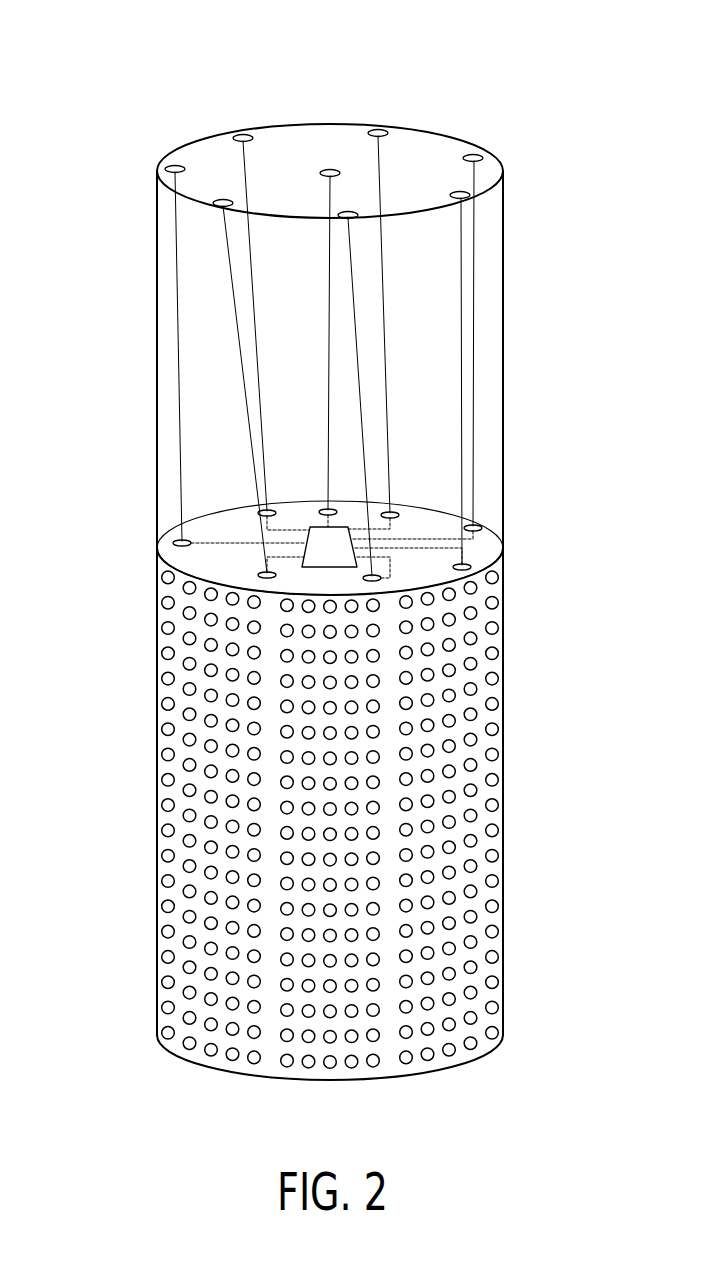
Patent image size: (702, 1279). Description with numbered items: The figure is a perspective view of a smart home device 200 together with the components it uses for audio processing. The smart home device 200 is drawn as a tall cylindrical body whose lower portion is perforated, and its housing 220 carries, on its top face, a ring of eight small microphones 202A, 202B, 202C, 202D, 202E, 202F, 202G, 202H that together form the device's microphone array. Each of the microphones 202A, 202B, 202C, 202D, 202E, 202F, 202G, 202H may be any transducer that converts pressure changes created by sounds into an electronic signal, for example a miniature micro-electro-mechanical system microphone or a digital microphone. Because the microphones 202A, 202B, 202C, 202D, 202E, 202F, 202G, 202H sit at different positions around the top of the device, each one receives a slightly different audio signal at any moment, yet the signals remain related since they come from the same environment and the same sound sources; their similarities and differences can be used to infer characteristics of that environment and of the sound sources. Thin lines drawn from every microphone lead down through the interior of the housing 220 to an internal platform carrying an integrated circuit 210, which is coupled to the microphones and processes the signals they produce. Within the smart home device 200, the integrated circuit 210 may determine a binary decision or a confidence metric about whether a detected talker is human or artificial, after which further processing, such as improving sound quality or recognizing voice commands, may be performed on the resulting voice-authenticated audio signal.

The smart home device 200 is at (98, 86).
The microphone 202A is at (388, 132).
The microphone 202B is at (483, 158).
The microphone 202C is at (470, 196).
The microphone 202D is at (338, 216).
The microphone 202E is at (213, 204).
The microphone 202F is at (165, 170).
The microphone 202G is at (233, 137).
The microphone 202H is at (329, 169).
The integrated circuit 210 is at (318, 526).
The housing 220 is at (503, 464).